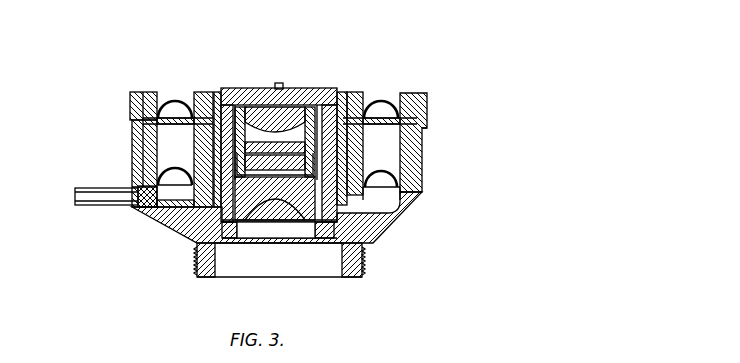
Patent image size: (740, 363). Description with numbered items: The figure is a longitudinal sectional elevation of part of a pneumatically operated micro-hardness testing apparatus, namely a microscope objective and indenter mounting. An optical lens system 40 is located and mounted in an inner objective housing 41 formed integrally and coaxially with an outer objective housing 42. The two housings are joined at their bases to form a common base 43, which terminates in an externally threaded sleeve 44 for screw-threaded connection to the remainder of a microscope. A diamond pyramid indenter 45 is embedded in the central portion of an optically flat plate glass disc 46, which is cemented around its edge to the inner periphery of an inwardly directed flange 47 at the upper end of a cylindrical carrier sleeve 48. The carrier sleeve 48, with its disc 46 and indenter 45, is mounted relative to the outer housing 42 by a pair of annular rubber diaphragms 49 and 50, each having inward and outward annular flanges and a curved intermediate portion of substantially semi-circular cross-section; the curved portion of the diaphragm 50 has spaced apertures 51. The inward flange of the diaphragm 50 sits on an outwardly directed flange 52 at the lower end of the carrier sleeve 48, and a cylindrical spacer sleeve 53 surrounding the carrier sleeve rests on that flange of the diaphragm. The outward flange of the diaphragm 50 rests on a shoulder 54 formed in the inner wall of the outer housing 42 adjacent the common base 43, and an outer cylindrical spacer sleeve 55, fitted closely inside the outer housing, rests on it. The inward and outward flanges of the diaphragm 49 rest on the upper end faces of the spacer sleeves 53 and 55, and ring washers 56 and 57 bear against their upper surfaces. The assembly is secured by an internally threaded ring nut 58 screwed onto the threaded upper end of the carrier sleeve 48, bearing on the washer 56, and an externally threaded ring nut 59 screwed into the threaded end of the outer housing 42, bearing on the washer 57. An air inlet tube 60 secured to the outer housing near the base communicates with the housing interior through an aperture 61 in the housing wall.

The optical lens system 40 is at (278, 150).
The inner objective housing 41 is at (322, 170).
The outer objective housing 42 is at (420, 184).
The common base 43 is at (167, 227).
The externally threaded sleeve 44 is at (200, 265).
The diamond pyramid indenter 45 is at (281, 84).
The optically flat plate glass disc 46 is at (243, 88).
The inwardly directed flange 47 is at (340, 93).
The cylindrical carrier sleeve 48 is at (350, 100).
The annular rubber diaphragm 49 is at (386, 104).
The annular rubber diaphragm 50 is at (395, 173).
The spaced apertures 51 is at (143, 162).
The outwardly directed flange 52 is at (365, 204).
The cylindrical spacer sleeve 53 is at (195, 158).
The shoulder 54 is at (403, 186).
The outer cylindrical spacer sleeve 55 is at (427, 130).
The ring washer 56 is at (203, 92).
The ring washer 57 is at (153, 92).
The ring nut 58 is at (210, 92).
The ring nut 59 is at (140, 99).
The air inlet tube 60 is at (88, 205).
The aperture 61 is at (150, 203).